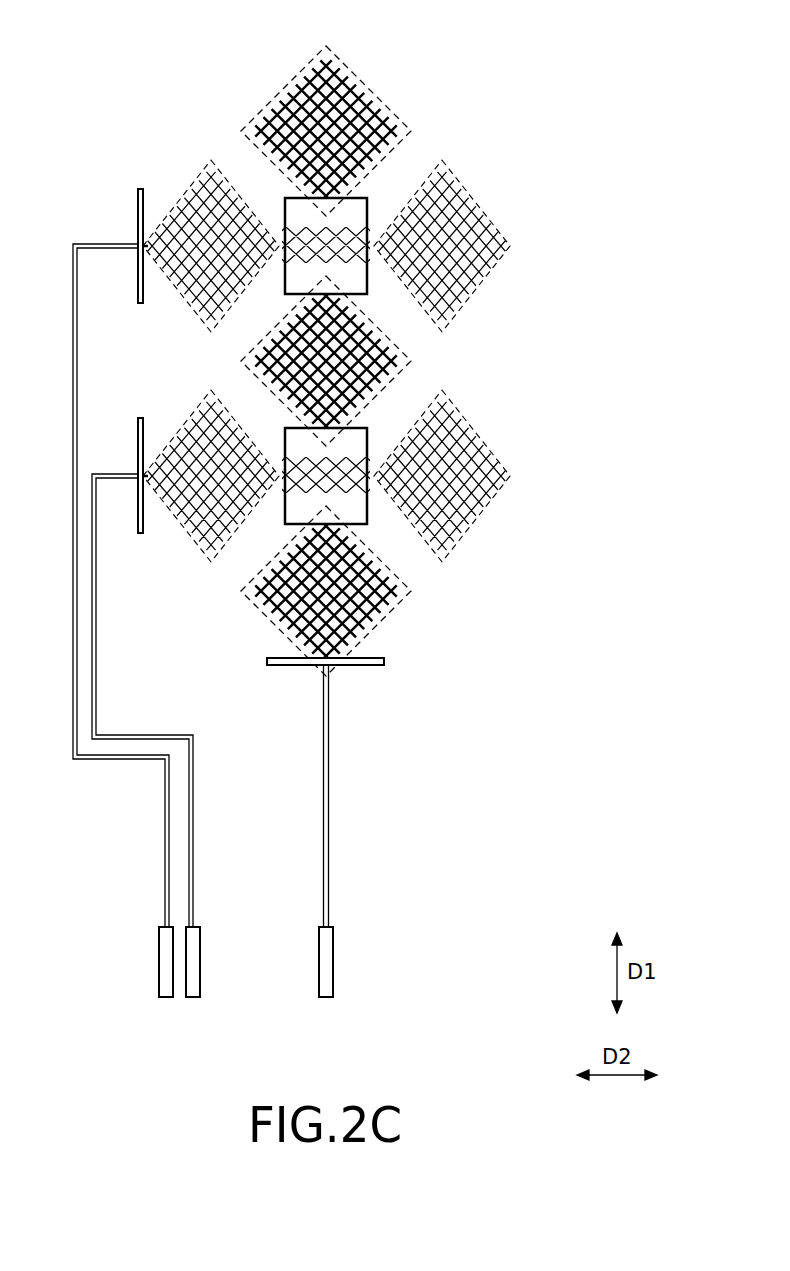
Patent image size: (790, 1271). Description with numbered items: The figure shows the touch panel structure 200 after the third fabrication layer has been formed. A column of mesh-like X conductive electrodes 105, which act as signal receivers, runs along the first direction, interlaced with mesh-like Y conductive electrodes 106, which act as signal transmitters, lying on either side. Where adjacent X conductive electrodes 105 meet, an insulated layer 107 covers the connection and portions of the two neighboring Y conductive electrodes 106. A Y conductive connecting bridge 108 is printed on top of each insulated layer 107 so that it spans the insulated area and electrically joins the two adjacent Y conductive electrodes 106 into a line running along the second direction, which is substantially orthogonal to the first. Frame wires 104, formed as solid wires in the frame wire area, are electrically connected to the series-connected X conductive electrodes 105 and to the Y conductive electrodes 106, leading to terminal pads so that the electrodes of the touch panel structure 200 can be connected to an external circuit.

The touch panel structure 200 is at (50, 29).
The frame wire 104 is at (110, 244).
The X conductive electrode 105 is at (366, 361).
The Y conductive electrode 106 is at (185, 303).
The insulated layer 107 is at (368, 203).
The Y conductive connecting bridge 108 is at (303, 230).